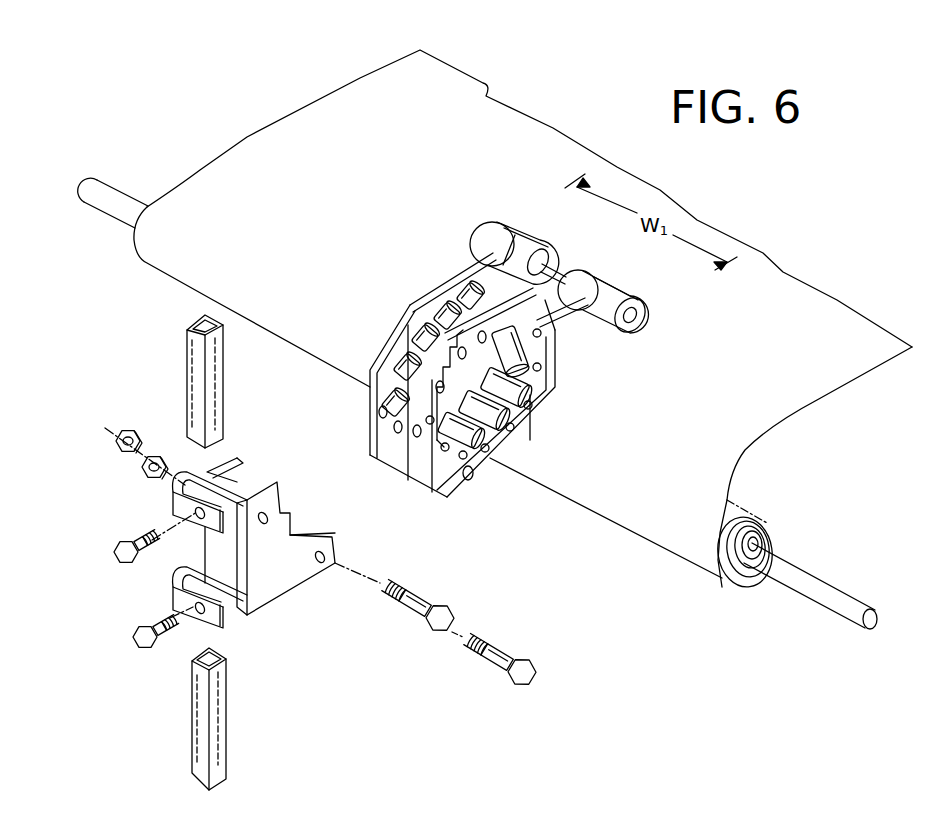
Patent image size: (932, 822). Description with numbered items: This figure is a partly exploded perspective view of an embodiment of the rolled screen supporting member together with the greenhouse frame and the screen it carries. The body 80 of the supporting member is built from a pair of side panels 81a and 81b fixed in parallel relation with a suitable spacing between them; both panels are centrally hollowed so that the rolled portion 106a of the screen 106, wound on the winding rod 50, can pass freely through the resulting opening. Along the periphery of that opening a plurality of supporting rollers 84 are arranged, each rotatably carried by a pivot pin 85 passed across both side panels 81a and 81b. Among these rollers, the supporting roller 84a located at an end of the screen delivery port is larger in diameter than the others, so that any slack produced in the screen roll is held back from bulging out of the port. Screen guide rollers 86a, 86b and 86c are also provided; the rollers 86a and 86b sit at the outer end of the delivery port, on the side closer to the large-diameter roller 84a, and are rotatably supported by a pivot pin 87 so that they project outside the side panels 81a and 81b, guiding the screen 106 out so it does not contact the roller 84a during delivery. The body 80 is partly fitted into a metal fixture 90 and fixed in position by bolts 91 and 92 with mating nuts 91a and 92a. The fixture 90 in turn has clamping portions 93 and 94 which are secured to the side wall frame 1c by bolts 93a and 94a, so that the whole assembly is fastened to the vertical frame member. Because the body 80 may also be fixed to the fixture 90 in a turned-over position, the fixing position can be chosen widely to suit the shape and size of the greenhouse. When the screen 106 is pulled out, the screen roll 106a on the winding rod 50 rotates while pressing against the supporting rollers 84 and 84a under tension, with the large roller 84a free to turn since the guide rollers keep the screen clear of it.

The side wall frame 1c is at (187, 350).
The winding rod 50 is at (817, 590).
The body of the rolled screen supporting member 80 is at (494, 362).
The side panel 81a is at (462, 483).
The side panel 81b is at (362, 413).
The supporting roller 84 is at (423, 332).
The large-diameter supporting roller 84a is at (540, 320).
The pivot pin 85 is at (440, 443).
The screen guide roller 86a is at (620, 290).
The screen guide roller 86b is at (533, 238).
The screen guide roller 86c is at (505, 250).
The pivot pin 87 is at (553, 272).
The metal fixture 90 is at (221, 542).
The bolt 91 is at (497, 650).
The nut 91a is at (142, 470).
The bolt 92 is at (420, 593).
The nut 92a is at (130, 428).
The clamping portion 93 is at (175, 590).
The bolt 93a is at (133, 643).
The clamping portion 94 is at (197, 473).
The bolt 94a is at (115, 548).
The screen 106 is at (863, 365).
The rolled portion of the screen 106a is at (620, 496).